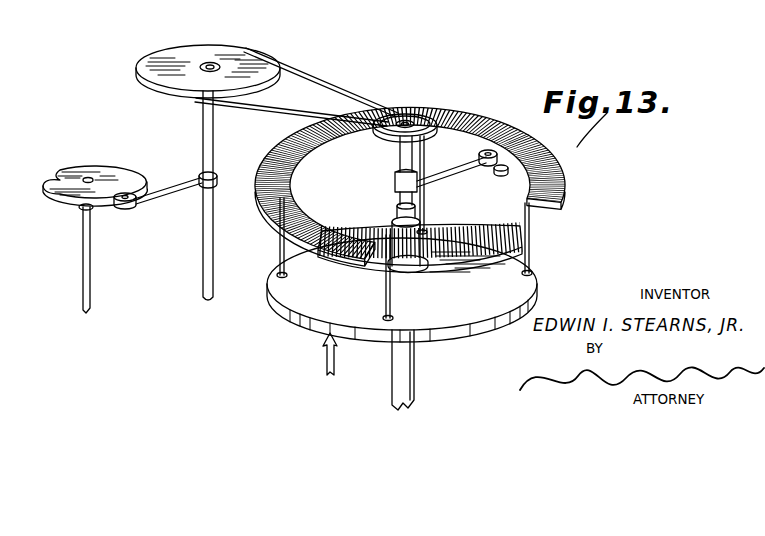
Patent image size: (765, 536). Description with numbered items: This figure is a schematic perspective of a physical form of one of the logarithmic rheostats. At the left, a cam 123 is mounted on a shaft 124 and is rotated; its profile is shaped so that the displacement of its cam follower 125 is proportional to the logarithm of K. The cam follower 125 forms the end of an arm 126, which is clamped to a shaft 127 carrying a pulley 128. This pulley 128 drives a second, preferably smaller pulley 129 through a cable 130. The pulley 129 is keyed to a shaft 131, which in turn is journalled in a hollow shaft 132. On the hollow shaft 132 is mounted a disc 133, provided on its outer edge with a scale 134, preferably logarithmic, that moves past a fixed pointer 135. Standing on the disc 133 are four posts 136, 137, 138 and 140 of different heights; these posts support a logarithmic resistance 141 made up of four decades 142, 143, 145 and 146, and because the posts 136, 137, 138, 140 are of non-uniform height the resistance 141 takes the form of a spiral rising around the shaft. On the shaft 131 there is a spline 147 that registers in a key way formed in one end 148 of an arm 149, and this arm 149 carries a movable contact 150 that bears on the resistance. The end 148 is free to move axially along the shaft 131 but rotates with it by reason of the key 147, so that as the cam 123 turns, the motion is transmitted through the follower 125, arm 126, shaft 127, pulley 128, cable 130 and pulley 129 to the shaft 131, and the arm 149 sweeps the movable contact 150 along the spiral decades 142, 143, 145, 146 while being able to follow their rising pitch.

The cam 123 is at (96, 168).
The shaft 124 is at (88, 308).
The cam follower 125 is at (132, 206).
The arm 126 is at (170, 195).
The shaft 127 is at (209, 294).
The pulley 128 is at (148, 62).
The second pulley 129 is at (412, 118).
The cable 130 is at (337, 85).
The shaft 131 is at (397, 162).
The hollow shaft 132 is at (410, 264).
The disc 133 is at (453, 339).
The scale 134 is at (294, 315).
The pointer 135 is at (327, 352).
The post 136 is at (280, 241).
The post 137 is at (383, 303).
The post 138 is at (532, 242).
The post 140 is at (430, 152).
The logarithmic resistance 141 is at (493, 150).
The decade 142 is at (300, 213).
The decade 143 is at (396, 120).
The decade 145 is at (562, 172).
The decade 146 is at (350, 257).
The spline 147 is at (418, 206).
The end of arm 148 is at (394, 184).
The arm 149 is at (473, 168).
The movable contact 150 is at (506, 165).